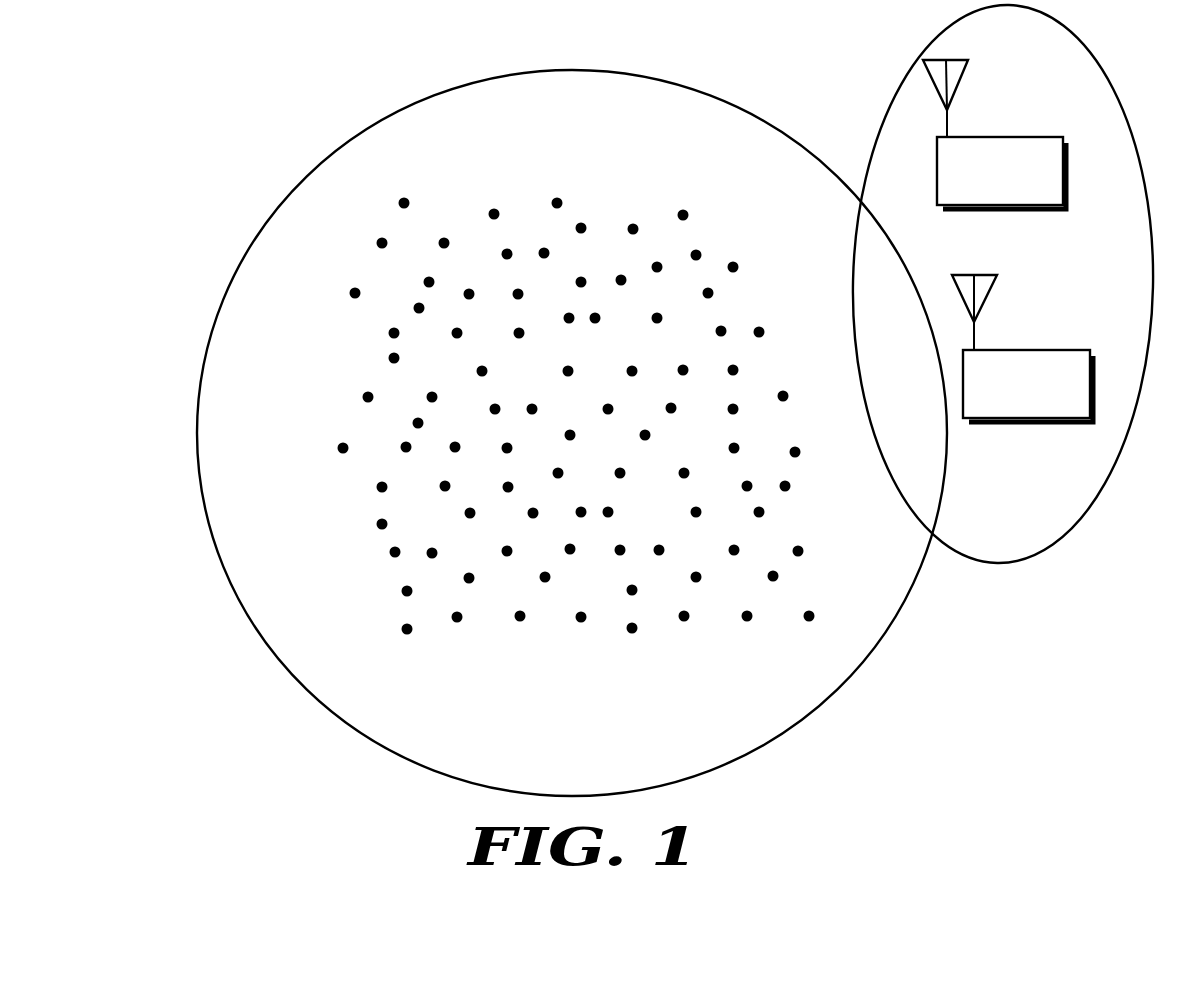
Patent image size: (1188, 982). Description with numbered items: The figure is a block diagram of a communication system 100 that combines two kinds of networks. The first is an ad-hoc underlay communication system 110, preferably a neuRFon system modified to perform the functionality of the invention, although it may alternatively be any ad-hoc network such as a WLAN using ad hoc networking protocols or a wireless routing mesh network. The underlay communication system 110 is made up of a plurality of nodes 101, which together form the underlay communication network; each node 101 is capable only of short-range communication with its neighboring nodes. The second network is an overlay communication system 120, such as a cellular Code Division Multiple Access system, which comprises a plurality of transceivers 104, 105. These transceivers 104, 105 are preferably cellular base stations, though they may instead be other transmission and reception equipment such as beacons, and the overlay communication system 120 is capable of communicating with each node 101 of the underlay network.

The communication system 100 is at (678, 457).
The node 101 is at (632, 628).
The transceiver 104 is at (1002, 565).
The transceiver 105 is at (993, 210).
The ad-hoc underlay communication system 110 is at (733, 765).
The overlay communication system 120 is at (993, 423).